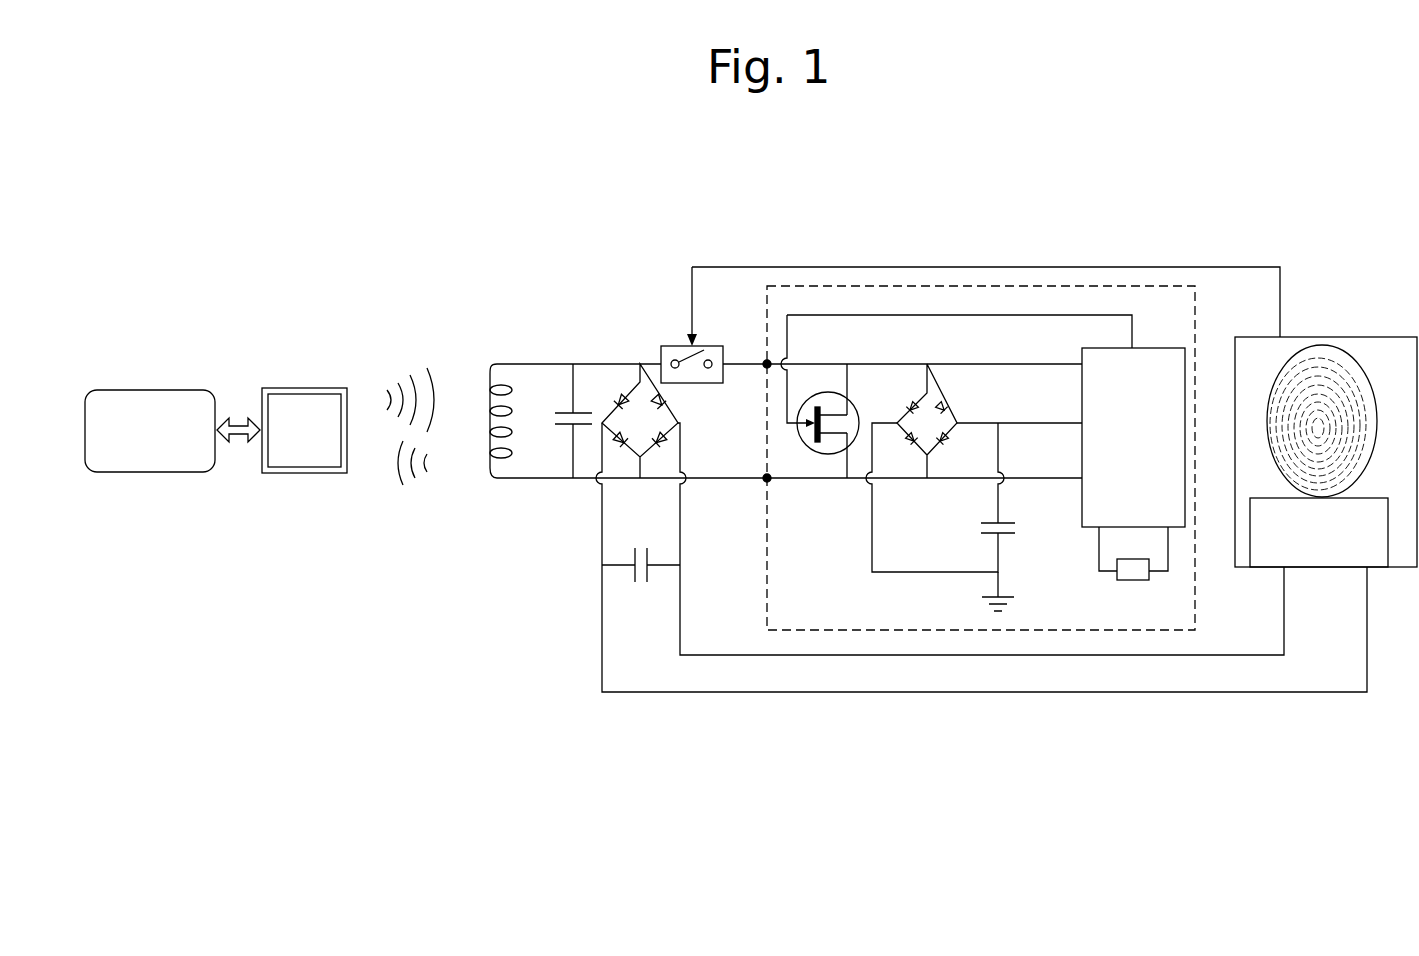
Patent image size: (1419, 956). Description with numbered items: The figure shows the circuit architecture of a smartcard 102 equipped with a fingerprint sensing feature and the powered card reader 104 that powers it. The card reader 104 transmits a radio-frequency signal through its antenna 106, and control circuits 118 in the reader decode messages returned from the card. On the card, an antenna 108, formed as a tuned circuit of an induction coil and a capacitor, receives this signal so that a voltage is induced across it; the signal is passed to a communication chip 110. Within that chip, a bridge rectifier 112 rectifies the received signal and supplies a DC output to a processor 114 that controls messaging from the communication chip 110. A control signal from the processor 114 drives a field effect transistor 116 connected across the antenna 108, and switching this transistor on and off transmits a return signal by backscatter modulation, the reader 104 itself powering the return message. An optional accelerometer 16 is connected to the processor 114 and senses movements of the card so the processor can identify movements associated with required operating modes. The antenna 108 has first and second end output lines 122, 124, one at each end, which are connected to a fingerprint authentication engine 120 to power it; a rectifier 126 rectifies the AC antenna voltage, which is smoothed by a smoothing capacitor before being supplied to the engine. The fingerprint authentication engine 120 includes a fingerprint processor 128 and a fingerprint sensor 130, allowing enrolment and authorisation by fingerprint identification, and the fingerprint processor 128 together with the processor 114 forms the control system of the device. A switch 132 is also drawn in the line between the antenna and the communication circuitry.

The smartcard 102 is at (1117, 155).
The powered card reader 104 is at (240, 288).
The antenna 106 is at (302, 474).
The antenna 108 is at (487, 390).
The communication chip 110 is at (853, 286).
The bridge rectifier 112 is at (927, 455).
The processor 114 is at (1163, 348).
The field effect transistor 116 is at (820, 392).
The control circuits 118 is at (147, 474).
The fingerprint authentication engine 120 is at (1315, 337).
The first end output line 122 is at (518, 362).
The second end output line 124 is at (533, 480).
The rectifier 126 is at (632, 400).
The fingerprint processor 128 is at (1327, 553).
The fingerprint sensor 130 is at (1353, 362).
The switch 132 is at (672, 345).
The accelerometer 16 is at (1127, 582).